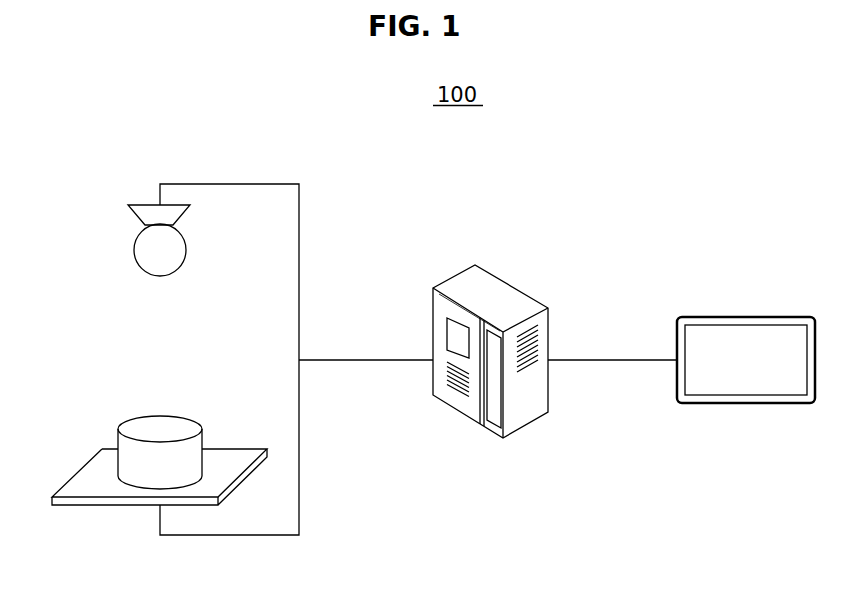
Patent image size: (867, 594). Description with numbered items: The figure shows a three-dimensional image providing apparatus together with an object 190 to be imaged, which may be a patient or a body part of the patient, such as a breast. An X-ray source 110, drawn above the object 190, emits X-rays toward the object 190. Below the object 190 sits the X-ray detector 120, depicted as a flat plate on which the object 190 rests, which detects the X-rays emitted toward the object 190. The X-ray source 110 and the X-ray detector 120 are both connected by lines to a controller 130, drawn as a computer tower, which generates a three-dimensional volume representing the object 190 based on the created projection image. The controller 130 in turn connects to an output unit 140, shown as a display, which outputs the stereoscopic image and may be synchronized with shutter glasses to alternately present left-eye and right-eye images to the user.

The X-ray source 110 is at (143, 243).
The X-ray detector 120 is at (92, 468).
The controller 130 is at (492, 282).
The output unit 140 is at (742, 320).
The object 190 is at (133, 420).